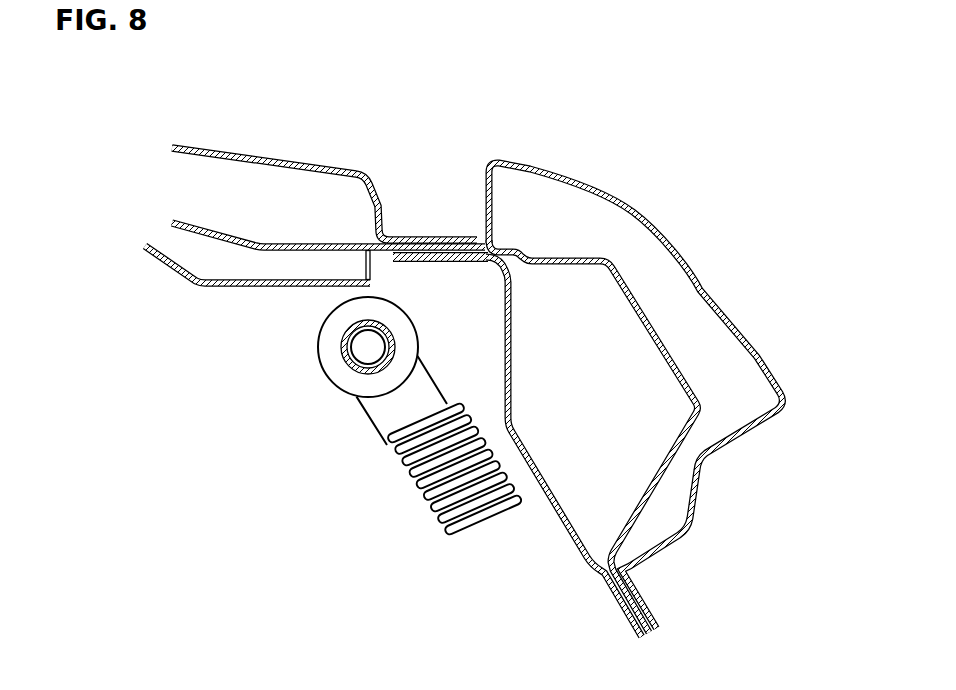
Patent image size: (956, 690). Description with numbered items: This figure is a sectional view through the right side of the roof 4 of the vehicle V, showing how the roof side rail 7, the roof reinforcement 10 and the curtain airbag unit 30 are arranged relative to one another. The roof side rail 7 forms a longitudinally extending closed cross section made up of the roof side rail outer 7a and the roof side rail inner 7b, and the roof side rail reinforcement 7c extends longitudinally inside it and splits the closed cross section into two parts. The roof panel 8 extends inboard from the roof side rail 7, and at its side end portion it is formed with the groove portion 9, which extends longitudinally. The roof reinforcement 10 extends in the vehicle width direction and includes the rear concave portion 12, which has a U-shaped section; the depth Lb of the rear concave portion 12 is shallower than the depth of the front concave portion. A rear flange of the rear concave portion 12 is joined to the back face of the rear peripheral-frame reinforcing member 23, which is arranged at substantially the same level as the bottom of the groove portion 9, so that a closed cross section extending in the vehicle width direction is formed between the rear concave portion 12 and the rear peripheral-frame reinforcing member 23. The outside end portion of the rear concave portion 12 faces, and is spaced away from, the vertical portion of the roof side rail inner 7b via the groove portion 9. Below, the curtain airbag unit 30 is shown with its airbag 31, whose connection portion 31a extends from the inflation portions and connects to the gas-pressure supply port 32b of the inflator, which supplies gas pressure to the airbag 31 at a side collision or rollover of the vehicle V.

The vehicle V is at (616, 128).
The roof 4 is at (324, 162).
The roof panel 8 is at (303, 160).
The groove portion 9 is at (386, 197).
The roof reinforcement 10 is at (315, 277).
The rear peripheral-frame reinforcing member 23 is at (268, 243).
The rear concave portion 12 is at (187, 279).
The depth of rear concave portion Lb is at (338, 252).
The roof side rail 7 is at (599, 400).
The roof side rail outer 7a is at (750, 343).
The roof side rail inner 7b is at (512, 368).
The roof side rail reinforcement 7c is at (674, 362).
The curtain airbag unit 30 is at (398, 436).
The airbag 31 is at (481, 527).
The connection portion 31a is at (363, 408).
The gas-pressure supply port 32b is at (347, 350).